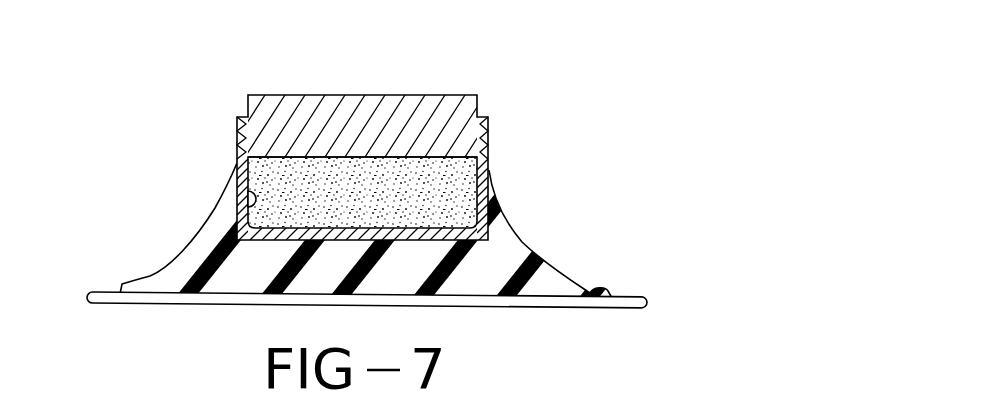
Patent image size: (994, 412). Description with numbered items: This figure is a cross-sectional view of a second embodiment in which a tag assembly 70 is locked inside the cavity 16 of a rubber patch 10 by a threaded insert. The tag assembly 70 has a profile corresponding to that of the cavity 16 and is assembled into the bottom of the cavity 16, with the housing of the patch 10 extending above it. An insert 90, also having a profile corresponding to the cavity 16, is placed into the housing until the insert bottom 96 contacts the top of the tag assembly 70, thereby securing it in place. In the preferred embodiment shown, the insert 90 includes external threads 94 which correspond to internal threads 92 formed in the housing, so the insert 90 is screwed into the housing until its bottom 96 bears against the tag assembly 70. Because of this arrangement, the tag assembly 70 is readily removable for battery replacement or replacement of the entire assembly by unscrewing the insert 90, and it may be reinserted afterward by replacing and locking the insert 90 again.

The rubber patch 10 is at (547, 256).
The cavity 16 is at (247, 215).
The tag assembly 70 is at (440, 192).
The insert 90 is at (363, 95).
The internal threads 92 is at (245, 130).
The external threads 94 is at (250, 137).
The insert bottom 96 is at (255, 165).